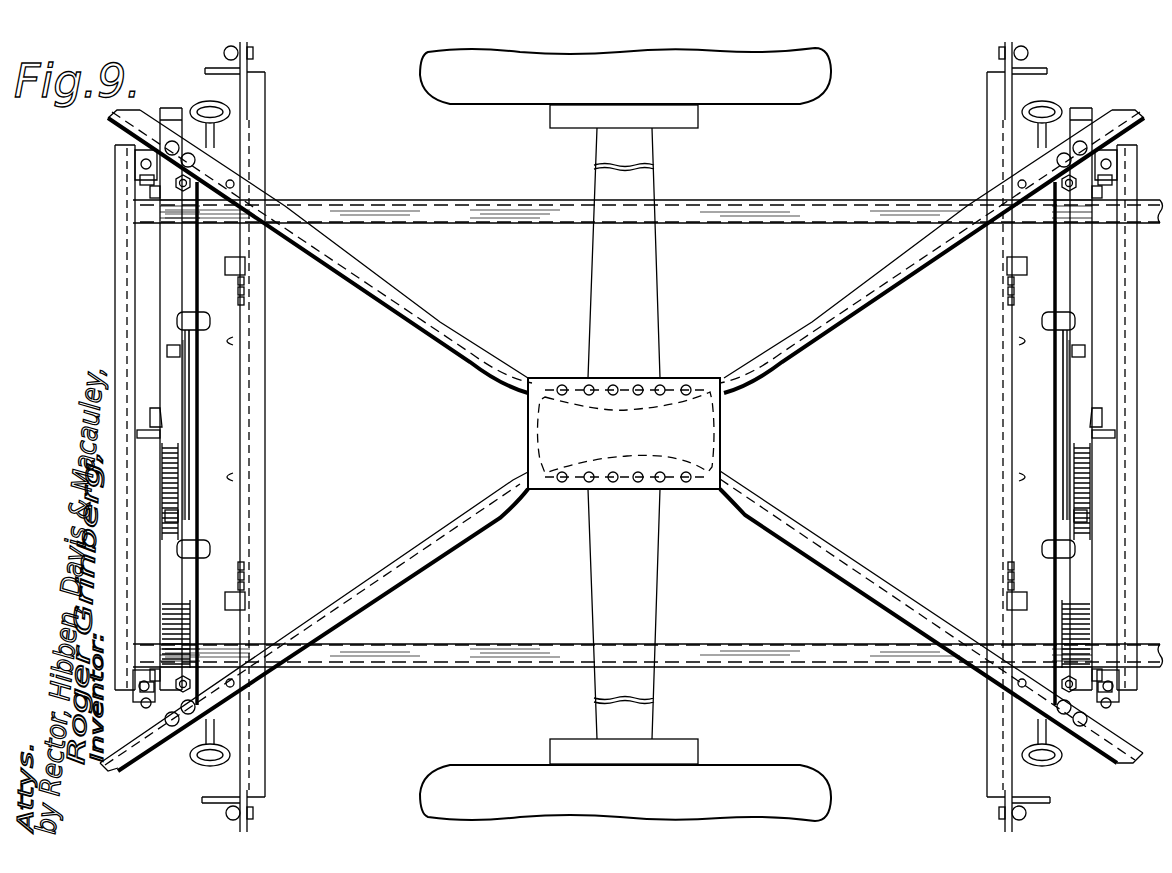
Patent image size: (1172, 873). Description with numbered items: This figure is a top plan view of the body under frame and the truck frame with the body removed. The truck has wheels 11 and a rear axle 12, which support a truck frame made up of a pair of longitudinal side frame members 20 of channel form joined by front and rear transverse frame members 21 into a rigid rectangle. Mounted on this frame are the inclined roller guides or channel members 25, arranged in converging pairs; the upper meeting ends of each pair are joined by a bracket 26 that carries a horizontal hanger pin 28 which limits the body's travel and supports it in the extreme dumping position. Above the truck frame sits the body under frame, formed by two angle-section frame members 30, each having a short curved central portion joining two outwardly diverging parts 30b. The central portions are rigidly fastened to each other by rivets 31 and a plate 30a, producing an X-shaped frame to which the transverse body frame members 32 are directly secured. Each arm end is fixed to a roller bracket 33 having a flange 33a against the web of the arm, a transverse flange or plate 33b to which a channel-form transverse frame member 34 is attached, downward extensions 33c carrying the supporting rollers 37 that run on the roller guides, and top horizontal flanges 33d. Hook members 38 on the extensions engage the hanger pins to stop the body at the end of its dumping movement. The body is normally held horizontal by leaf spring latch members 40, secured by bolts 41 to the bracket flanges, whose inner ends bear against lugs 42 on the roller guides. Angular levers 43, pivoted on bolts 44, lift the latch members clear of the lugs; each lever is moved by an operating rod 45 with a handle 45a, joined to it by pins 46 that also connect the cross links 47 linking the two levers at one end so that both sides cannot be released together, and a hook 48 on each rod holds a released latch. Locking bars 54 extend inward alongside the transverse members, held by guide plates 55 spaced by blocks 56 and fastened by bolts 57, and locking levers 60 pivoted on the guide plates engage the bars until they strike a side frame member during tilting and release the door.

The wheels 11 is at (823, 80).
The rear axle 12 is at (660, 185).
The longitudinal side frame members 20 is at (800, 200).
The transverse frame members 21 is at (200, 420).
The roller guides or channel members 25 is at (170, 447).
The bracket 26 is at (150, 415).
The hanger pin 28 is at (137, 434).
The frame members 30 is at (778, 324).
The plate 30a is at (722, 440).
The outwardly diverging parts 30b is at (430, 312).
The rivets 31 is at (613, 385).
The transverse body frame members 32 is at (265, 462).
The roller bracket 33 is at (140, 150).
The flange 33a is at (170, 143).
The flange or plate 33b is at (140, 180).
The downward extensions 33c is at (143, 162).
The top horizontal flanges 33d is at (165, 208).
The transverse frame members 34 is at (128, 330).
The supporting rollers 37 is at (158, 190).
The hook members 38 is at (135, 168).
The latch members 40 is at (167, 270).
The bolts 41 is at (200, 178).
The lugs 42 is at (183, 345).
The levers 43 is at (183, 380).
The bolts 44 is at (180, 350).
The operating rod 45 is at (247, 263).
The handle 45a is at (233, 108).
The pins 46 is at (210, 320).
The cross links 47 is at (192, 388).
The hook 48 is at (215, 148).
The locking bars 54 is at (232, 186).
The guide plates 55 is at (245, 290).
The blocks 56 is at (245, 280).
The bolts 57 is at (245, 300).
The locking levers 60 is at (235, 340).